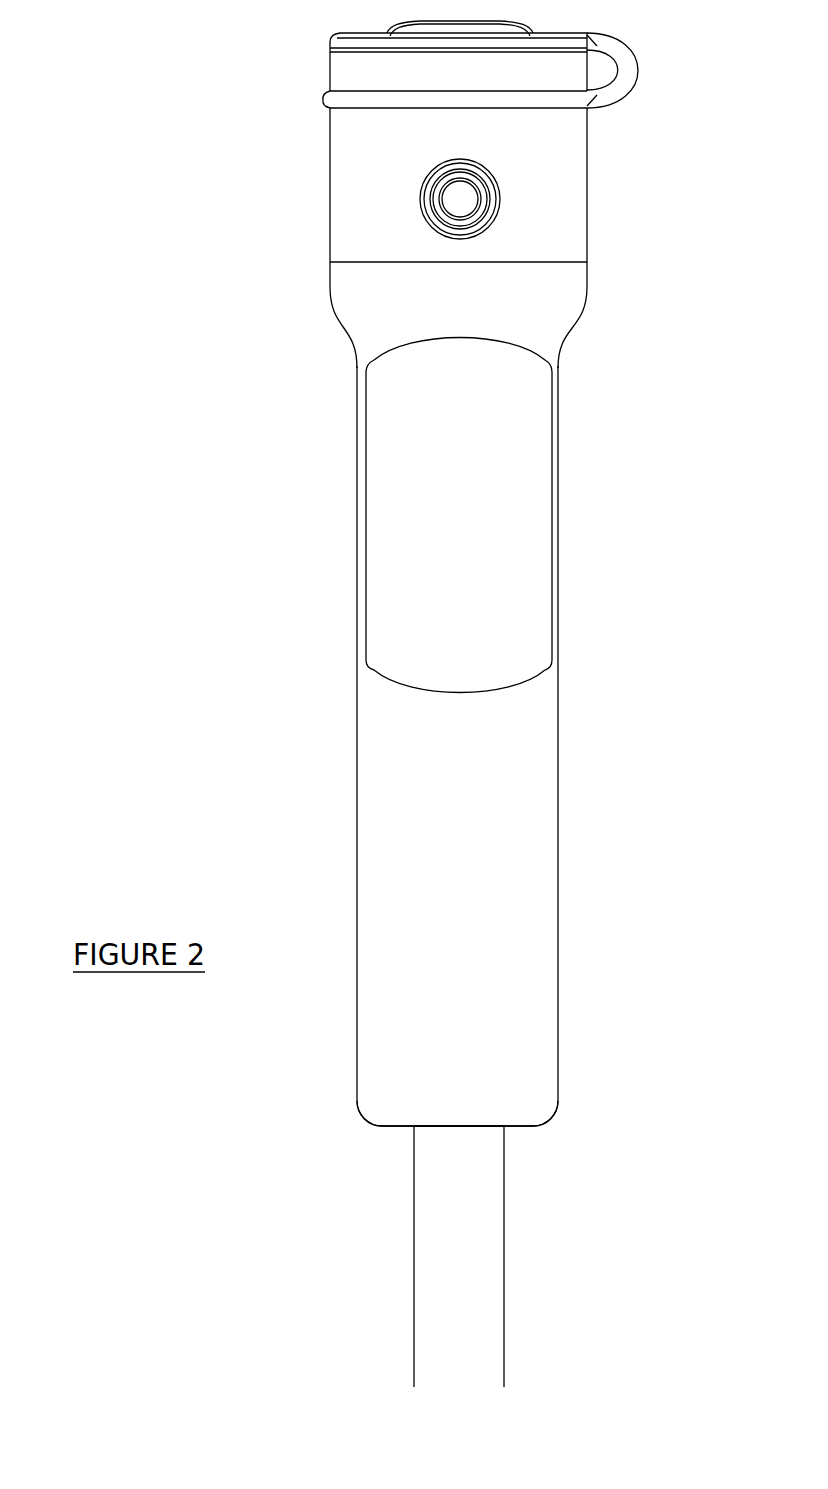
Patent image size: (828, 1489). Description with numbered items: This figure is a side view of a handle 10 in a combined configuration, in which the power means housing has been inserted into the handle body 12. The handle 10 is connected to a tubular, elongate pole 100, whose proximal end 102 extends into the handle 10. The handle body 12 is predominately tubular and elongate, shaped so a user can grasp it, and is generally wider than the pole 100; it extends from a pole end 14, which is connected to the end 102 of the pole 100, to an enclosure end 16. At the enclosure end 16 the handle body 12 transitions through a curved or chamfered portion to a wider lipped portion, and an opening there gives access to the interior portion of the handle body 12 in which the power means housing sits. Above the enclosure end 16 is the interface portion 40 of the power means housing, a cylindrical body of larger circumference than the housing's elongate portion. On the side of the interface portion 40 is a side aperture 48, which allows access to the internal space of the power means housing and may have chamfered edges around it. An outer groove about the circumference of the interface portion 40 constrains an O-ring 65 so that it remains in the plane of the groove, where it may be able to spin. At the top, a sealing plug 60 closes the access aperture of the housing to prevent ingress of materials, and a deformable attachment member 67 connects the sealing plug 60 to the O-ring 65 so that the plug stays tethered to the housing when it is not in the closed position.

The handle 10 is at (185, 450).
The handle body 12 is at (500, 770).
The pole end 14 is at (472, 1126).
The enclosure end 16 is at (510, 272).
The interface portion 40 is at (350, 183).
The side aperture 48 is at (467, 200).
The sealing plug 60 is at (632, 48).
The O-ring 65 is at (323, 100).
The deformable attachment member 67 is at (632, 73).
The pole 100 is at (490, 1228).
The proximal end 102 is at (472, 1131).